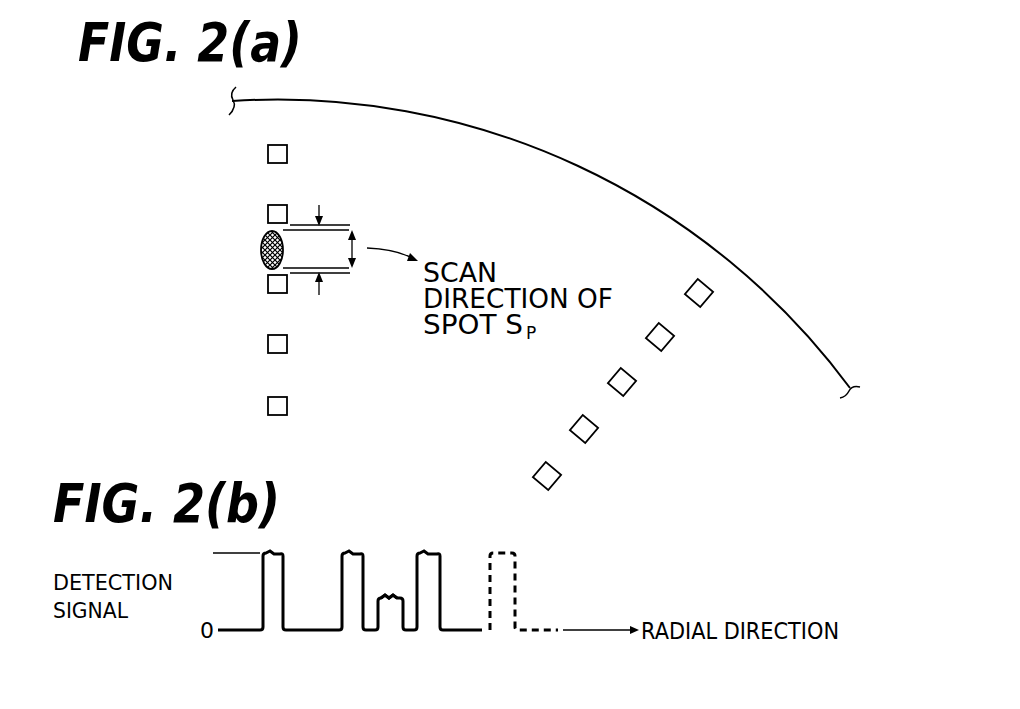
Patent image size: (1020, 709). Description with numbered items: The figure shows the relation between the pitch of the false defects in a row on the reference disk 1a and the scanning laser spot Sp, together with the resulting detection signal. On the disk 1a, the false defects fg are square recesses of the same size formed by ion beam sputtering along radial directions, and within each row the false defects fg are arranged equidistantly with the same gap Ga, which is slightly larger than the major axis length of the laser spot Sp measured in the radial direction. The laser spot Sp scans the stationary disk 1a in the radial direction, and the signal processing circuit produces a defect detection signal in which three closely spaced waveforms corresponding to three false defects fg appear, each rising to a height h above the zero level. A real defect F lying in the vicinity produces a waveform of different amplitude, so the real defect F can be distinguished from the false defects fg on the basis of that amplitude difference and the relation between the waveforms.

In FIG. 2A, the disk 1a is at (616, 225).
In FIG. 2A, the false defect fg is at (288, 156).
In FIG. 2A, the laser spot Sp is at (260, 255).
In FIG. 2A, the gap Ga is at (355, 248).
In FIG. 2A, the real defect F is at (294, 313).
In FIG. 2B, the real defect F is at (392, 612).
In FIG. 2B, the detection signal height h is at (226, 560).